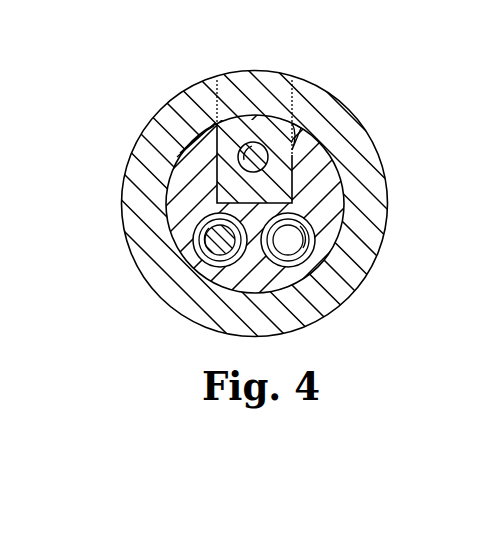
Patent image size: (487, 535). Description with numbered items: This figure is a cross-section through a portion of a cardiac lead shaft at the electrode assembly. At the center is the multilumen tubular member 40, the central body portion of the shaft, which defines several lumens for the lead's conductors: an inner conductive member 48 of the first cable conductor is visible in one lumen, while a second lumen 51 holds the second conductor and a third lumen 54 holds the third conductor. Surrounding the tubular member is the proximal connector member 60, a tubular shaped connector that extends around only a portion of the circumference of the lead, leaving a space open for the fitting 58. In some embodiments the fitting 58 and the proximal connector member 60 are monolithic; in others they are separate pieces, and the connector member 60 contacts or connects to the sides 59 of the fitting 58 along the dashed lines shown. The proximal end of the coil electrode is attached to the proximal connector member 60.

The multilumen tubular member 40 is at (183, 193).
The inner conductive member 48 is at (268, 157).
The second lumen 51 is at (183, 258).
The third lumen 54 is at (361, 281).
The fitting 58 is at (252, 110).
The sides of the fitting 59 is at (203, 126).
The proximal connector member 60 is at (360, 192).